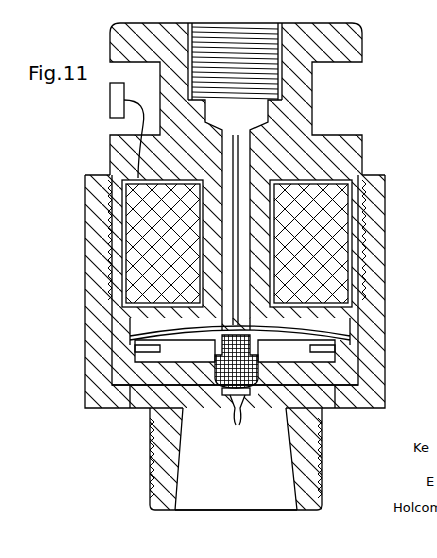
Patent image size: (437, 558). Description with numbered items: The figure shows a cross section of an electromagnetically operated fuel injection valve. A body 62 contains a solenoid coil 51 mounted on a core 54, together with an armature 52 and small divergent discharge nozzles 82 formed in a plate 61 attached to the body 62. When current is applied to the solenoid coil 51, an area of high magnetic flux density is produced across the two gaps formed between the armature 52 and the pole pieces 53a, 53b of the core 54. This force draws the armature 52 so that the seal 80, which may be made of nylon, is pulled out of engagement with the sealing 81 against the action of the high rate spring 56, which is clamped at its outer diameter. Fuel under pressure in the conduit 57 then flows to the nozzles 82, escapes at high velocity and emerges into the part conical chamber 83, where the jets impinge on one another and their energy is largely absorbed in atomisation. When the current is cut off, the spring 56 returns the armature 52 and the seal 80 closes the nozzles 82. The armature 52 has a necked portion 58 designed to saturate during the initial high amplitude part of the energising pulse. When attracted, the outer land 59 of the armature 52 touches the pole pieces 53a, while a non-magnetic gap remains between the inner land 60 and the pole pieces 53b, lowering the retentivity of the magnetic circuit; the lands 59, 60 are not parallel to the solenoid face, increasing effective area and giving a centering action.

The solenoid coil 51 is at (345, 245).
The armature 52 is at (366, 409).
The pole pieces 53a is at (348, 318).
The pole pieces 53b is at (212, 328).
The core 54 is at (207, 227).
The spring 56 is at (350, 345).
The conduit 57 is at (228, 121).
The necked portion 58 is at (147, 412).
The outer land 59 is at (208, 343).
The inner land 60 is at (330, 414).
The plate 61 is at (128, 405).
The body 62 is at (92, 240).
The seal 80 is at (323, 450).
The sealing 81 is at (205, 412).
The discharge nozzles 82 is at (239, 423).
The part conical chamber 83 is at (240, 501).